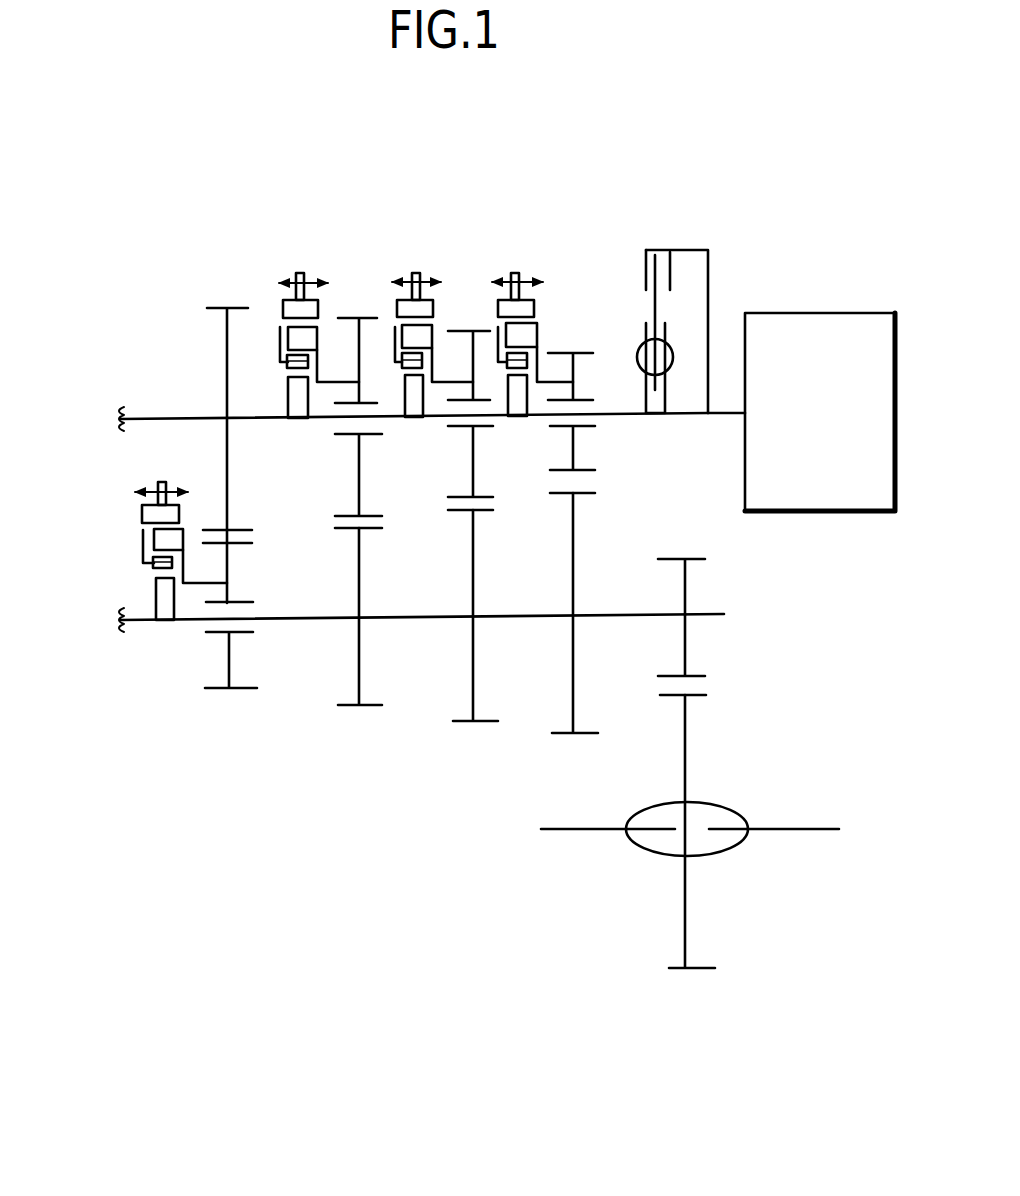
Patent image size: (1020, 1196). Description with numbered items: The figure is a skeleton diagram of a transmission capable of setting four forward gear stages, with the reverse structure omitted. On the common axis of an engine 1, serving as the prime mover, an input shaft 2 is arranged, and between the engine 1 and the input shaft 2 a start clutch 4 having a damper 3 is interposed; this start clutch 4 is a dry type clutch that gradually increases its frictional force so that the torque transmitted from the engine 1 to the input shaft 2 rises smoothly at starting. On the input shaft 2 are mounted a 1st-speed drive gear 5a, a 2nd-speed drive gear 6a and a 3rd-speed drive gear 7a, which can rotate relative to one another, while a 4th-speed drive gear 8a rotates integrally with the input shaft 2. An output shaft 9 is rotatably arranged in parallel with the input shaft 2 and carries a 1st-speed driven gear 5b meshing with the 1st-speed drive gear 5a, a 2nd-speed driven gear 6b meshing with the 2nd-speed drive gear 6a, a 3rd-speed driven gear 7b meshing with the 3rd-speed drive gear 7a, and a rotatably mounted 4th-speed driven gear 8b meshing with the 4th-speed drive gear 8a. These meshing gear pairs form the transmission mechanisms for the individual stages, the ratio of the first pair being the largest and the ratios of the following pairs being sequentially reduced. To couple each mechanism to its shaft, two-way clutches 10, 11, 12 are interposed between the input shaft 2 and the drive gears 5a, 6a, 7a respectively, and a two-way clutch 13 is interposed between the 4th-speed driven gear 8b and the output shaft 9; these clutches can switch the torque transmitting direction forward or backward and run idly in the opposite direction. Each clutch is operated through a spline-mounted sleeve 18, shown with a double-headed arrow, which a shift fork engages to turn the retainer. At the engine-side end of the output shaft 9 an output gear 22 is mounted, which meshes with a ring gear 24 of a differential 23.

The engine 1 is at (825, 310).
The input shaft 2 is at (645, 415).
The damper 3 is at (667, 352).
The start clutch 4 is at (650, 250).
The 1st-speed drive gear 5a is at (580, 352).
The 1st-speed driven gear 5b is at (573, 735).
The 2nd-speed drive gear 6a is at (470, 476).
The 2nd-speed driven gear 6b is at (468, 723).
The 3rd-speed drive gear 7a is at (358, 481).
The 3rd-speed driven gear 7b is at (353, 707).
The 4th-speed drive gear 8a is at (214, 307).
The 4th-speed driven gear 8b is at (214, 690).
The output shaft 9 is at (724, 614).
The two-way clutch 10 is at (518, 432).
The two-way clutch 11 is at (431, 255).
The two-way clutch 12 is at (314, 254).
The two-way clutch 13 is at (132, 562).
The sleeve 18 is at (283, 303).
The output gear 22 is at (693, 557).
The differential 23 is at (741, 848).
The ring gear 24 is at (704, 697).